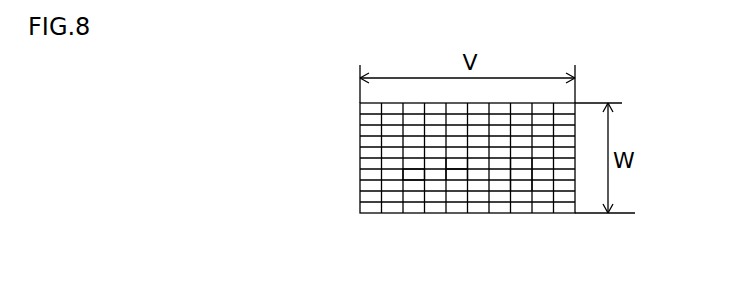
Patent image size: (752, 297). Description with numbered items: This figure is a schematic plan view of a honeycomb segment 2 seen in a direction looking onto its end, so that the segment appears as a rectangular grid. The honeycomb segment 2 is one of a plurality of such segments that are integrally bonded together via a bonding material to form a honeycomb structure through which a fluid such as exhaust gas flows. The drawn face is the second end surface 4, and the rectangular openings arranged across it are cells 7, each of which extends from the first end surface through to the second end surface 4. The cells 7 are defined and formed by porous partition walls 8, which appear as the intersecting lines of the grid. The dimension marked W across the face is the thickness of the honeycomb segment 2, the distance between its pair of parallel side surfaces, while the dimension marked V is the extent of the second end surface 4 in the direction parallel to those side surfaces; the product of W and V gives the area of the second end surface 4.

The honeycomb segment 2 is at (356, 165).
The second end surface 4 is at (460, 168).
The cell 7 is at (520, 175).
The porous partition wall 8 is at (423, 173).